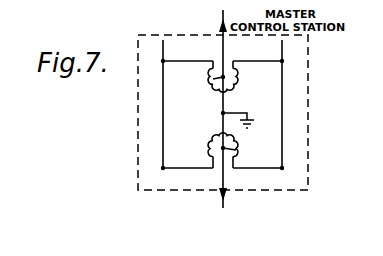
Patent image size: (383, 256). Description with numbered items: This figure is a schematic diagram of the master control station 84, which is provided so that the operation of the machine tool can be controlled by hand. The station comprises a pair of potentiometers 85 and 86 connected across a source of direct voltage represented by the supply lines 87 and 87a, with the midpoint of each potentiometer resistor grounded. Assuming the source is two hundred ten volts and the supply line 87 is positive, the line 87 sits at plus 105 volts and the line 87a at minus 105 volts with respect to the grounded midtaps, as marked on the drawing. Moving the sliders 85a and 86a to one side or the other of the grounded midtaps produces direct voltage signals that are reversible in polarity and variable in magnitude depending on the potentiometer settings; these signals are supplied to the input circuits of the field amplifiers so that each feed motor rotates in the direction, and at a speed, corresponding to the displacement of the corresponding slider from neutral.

The master control station 84 is at (309, 68).
The potentiometer 85 is at (238, 89).
The slider 85a is at (213, 79).
The potentiometer 86 is at (209, 141).
The slider 86a is at (236, 150).
The supply line 87 is at (163, 50).
The supply line 87a is at (283, 60).
The supply voltage lines 105 is at (220, 45).